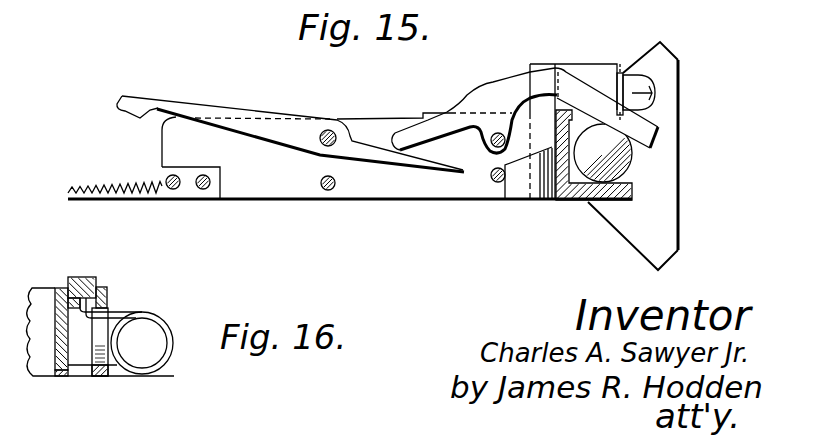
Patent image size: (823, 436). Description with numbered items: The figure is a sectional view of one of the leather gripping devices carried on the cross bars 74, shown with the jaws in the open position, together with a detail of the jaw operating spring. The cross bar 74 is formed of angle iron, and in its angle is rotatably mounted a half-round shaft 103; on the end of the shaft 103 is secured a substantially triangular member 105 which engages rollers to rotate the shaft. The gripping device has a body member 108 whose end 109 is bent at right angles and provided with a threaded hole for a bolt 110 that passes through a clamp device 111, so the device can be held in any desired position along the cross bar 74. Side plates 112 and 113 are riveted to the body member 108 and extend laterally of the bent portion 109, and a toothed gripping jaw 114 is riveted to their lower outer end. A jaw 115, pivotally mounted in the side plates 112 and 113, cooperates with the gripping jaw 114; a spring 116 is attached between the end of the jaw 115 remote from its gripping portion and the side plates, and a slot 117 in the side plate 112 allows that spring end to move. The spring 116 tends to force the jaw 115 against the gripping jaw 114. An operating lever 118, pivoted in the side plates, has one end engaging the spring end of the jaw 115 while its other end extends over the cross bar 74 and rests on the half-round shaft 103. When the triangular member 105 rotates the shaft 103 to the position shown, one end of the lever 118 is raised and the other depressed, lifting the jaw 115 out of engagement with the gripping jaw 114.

In FIG. 15, the cross bar 74 is at (562, 190).
In FIG. 15, the half-round shaft 103 is at (630, 170).
In FIG. 15, the triangular member 105 is at (746, 75).
In FIG. 15, the body member 108 is at (518, 188).
In FIG. 15, the bent end of body member 109 is at (540, 58).
In FIG. 15, the bolt 110 is at (641, 77).
In FIG. 15, the clamp device 111 is at (578, 68).
In FIG. 16, the side plate 112 is at (108, 291).
In FIG. 15, the side plate 113 is at (367, 127).
In FIG. 16, the side plate 113 is at (62, 289).
In FIG. 15, the toothed gripping jaw 114 is at (103, 197).
In FIG. 15, the jaw 115 is at (212, 110).
In FIG. 16, the spring 116 is at (160, 320).
In FIG. 16, the slot 117 is at (100, 337).
In FIG. 15, the operating lever 118 is at (488, 92).
In FIG. 16, the operating lever 118 is at (85, 285).